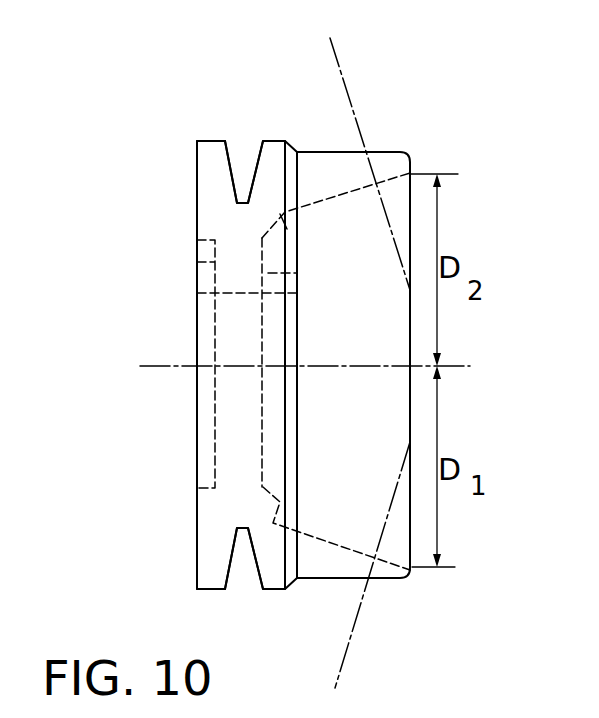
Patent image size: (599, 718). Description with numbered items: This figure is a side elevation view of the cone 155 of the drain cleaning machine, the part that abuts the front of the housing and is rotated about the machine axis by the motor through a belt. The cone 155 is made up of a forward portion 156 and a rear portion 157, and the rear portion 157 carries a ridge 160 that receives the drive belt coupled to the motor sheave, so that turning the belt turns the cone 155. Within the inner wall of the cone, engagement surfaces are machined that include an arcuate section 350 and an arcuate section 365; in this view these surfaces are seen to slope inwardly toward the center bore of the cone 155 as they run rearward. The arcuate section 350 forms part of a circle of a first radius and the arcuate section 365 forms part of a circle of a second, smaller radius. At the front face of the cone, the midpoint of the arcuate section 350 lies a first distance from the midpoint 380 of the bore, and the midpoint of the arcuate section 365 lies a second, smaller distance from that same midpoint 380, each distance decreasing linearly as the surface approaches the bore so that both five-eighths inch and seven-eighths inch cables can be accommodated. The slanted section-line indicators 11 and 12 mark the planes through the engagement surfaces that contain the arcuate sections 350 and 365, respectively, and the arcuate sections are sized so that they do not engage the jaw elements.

The cone 155 is at (396, 83).
The rear portion 157 is at (212, 156).
The forward portion 156 is at (329, 170).
The ridge 160 is at (243, 563).
The arcuate section 365 is at (349, 192).
The arcuate section 350 is at (345, 548).
The midpoint of bore 380 is at (299, 366).
The section line 12- 12 is at (327, 42).
The section line 11- 11 is at (405, 442).